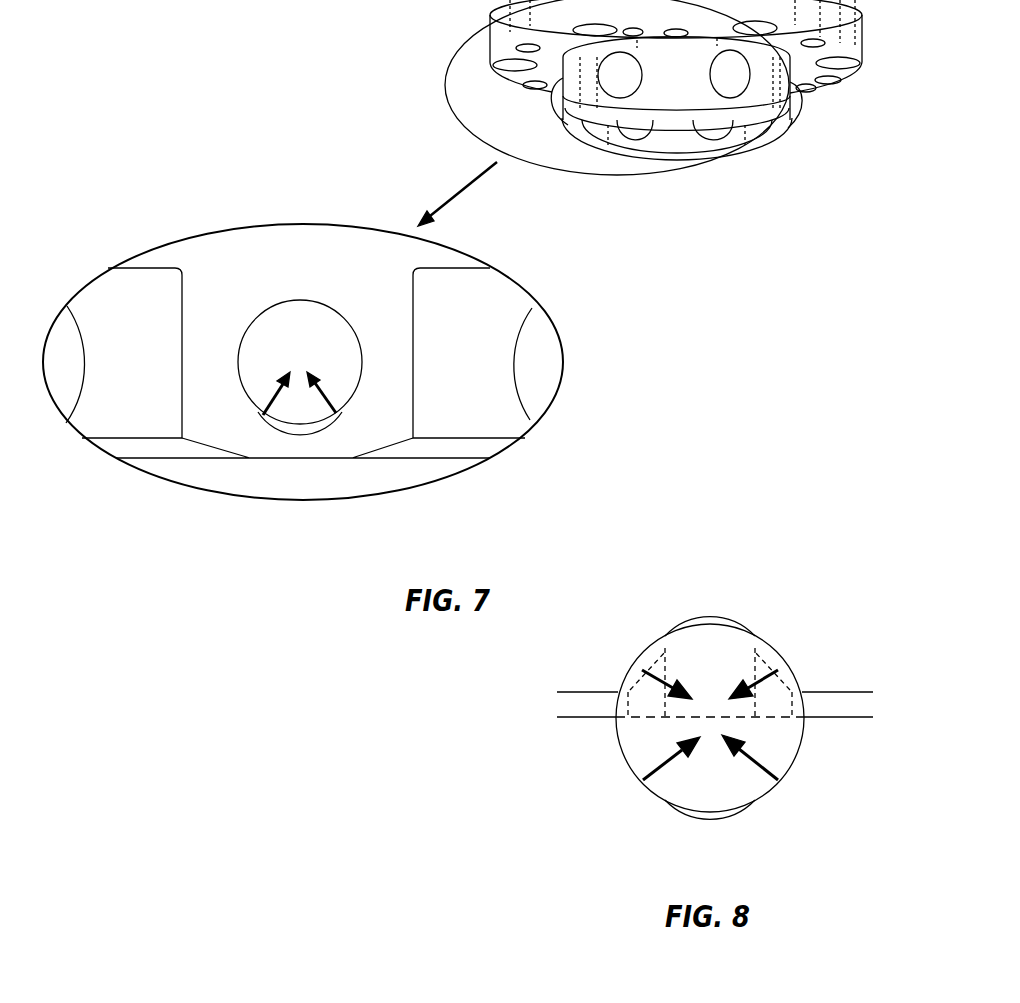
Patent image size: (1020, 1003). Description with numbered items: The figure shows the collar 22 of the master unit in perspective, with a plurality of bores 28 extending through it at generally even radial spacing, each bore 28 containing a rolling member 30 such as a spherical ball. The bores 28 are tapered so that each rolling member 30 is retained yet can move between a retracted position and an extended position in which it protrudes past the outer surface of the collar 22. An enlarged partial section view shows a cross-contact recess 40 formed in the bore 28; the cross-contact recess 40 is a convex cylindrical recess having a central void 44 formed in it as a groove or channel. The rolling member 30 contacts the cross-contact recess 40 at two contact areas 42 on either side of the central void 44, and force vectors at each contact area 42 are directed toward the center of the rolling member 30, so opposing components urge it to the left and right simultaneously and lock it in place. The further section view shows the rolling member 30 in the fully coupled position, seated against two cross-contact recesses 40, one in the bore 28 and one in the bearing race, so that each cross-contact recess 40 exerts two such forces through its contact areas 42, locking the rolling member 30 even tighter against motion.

In FIG. 7, the collar 22 is at (777, 72).
In FIG. 7, the bore 28 is at (663, 147).
In FIG. 7, the rolling member 30 is at (793, 100).
In FIG. 8, the rolling member 30 is at (655, 745).
In FIG. 7, the cross-contact recess 40 is at (259, 436).
In FIG. 8, the cross-contact recess 40 is at (789, 629).
In FIG. 7, the contact area 42 is at (265, 415).
In FIG. 8, the contact area 42 is at (787, 688).
In FIG. 7, the central void 44 is at (285, 432).
In FIG. 8, the central void 44 is at (717, 620).